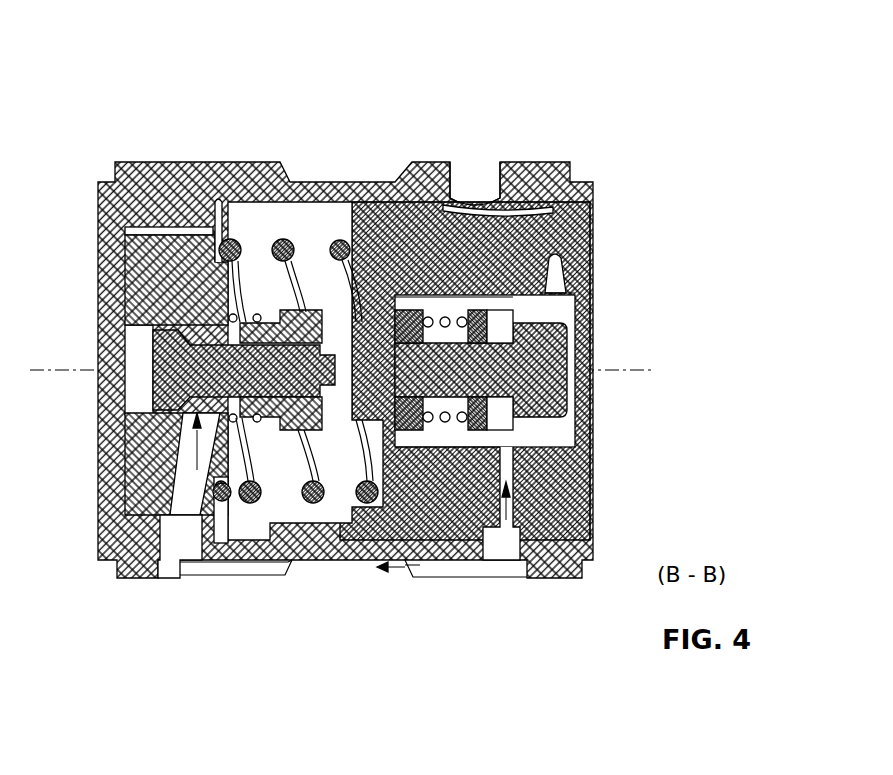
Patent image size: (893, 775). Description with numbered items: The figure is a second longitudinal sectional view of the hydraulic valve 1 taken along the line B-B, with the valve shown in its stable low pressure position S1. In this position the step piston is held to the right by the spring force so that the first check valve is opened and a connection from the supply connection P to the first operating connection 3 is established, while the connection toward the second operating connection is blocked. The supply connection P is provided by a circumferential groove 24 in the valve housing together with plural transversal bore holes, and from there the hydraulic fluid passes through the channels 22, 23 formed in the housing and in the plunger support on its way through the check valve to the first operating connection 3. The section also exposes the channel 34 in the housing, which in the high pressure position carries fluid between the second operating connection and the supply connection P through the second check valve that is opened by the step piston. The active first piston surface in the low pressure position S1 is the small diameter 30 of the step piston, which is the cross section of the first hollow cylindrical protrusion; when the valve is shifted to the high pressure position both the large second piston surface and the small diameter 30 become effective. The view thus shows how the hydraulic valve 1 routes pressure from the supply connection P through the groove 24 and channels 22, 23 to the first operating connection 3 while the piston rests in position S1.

The hydraulic valve 1 is at (724, 154).
The first operating connection 3 is at (472, 200).
The channel 22 is at (560, 423).
The channel 23 is at (560, 478).
The circumferential groove 24 is at (238, 578).
The small diameter 30 is at (565, 397).
The channel 34 is at (180, 470).
The low pressure position S1 is at (625, 139).
The supply connection P is at (177, 548).